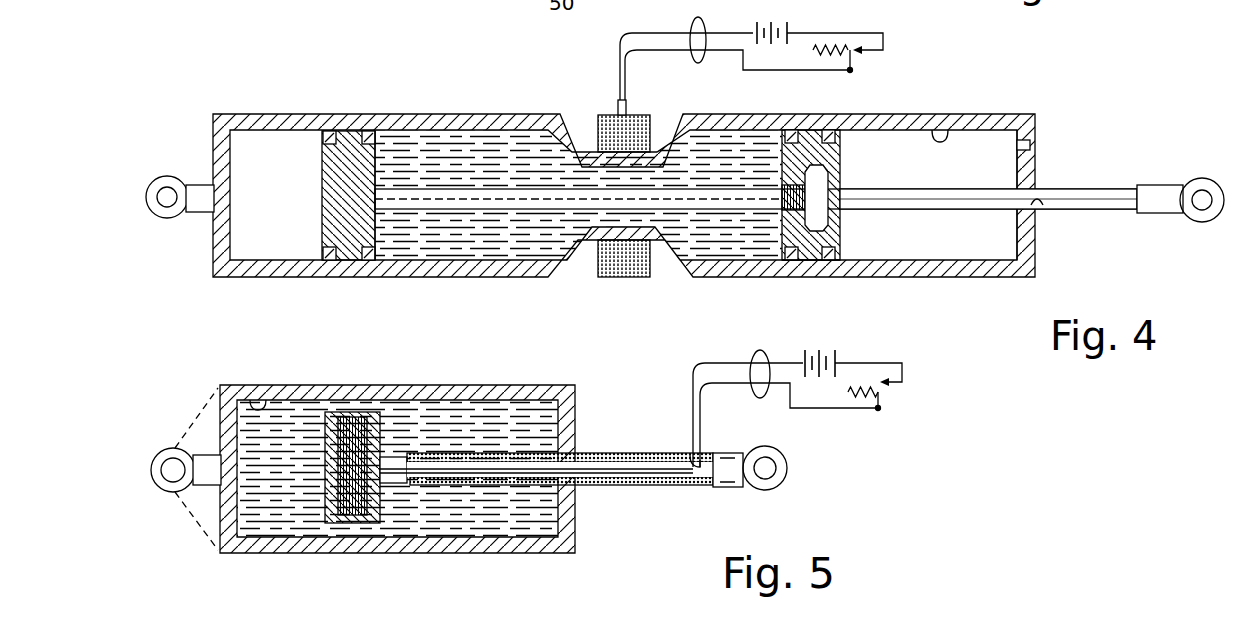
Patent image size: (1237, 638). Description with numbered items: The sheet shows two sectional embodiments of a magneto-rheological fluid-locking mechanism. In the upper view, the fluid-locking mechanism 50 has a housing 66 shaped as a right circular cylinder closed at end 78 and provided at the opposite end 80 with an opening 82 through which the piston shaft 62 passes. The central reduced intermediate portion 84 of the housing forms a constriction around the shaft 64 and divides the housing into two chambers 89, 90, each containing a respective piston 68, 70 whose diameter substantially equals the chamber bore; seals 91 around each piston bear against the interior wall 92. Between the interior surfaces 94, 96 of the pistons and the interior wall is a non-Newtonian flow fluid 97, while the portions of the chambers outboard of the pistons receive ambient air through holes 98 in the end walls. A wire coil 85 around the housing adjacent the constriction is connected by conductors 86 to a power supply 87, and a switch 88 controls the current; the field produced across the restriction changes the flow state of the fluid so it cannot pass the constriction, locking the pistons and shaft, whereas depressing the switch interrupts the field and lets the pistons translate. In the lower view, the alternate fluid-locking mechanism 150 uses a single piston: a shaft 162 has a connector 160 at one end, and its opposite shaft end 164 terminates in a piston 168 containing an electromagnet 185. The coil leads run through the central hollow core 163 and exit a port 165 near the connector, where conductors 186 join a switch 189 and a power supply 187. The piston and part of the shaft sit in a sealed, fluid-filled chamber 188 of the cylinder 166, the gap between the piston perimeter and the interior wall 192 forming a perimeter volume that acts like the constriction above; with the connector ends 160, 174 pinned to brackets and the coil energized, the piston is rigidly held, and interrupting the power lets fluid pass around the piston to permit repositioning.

In FIG. 4, the fluid-locking mechanism 50 is at (1058, 95).
In FIG. 4, the piston shaft 62 is at (1122, 193).
In FIG. 4, the shaft 64 is at (394, 194).
In FIG. 4, the housing 66 is at (482, 113).
In FIG. 4, the piston 68 is at (348, 183).
In FIG. 4, the piston 70 is at (840, 248).
In FIG. 4, the end 78 is at (213, 125).
In FIG. 4, the end 80 is at (1033, 168).
In FIG. 4, the opening 82 is at (1042, 207).
In FIG. 4, the reduced intermediate portion 84 is at (603, 163).
In FIG. 4, the wire coil 85 is at (636, 114).
In FIG. 4, the conductors 86 is at (692, 25).
In FIG. 4, the power supply 87 is at (783, 30).
In FIG. 4, the switch 88 is at (852, 71).
In FIG. 4, the chamber 89 is at (983, 157).
In FIG. 4, the chamber 90 is at (253, 143).
In FIG. 4, the seals 91 is at (365, 130).
In FIG. 4, the interior wall 92 is at (952, 137).
In FIG. 4, the interior surface 94 is at (375, 234).
In FIG. 4, the interior surface 96 is at (840, 149).
In FIG. 4, the non-Newtonian flow fluid 97 is at (745, 245).
In FIG. 4, the holes 98 is at (1030, 146).
In FIG. 5, the fluid-locking mechanism 150 is at (608, 352).
In FIG. 5, the connector 160 is at (778, 485).
In FIG. 5, the shaft 162 is at (730, 476).
In FIG. 5, the central hollow core 163 is at (627, 465).
In FIG. 5, the shaft end 164 is at (546, 446).
In FIG. 5, the port 165 is at (692, 457).
In FIG. 5, the cylinder 166 is at (532, 395).
In FIG. 5, the piston 168 is at (346, 472).
In FIG. 5, the connector end 174 is at (173, 452).
In FIG. 5, the electromagnet 185 is at (347, 515).
In FIG. 5, the conductors 186 is at (760, 350).
In FIG. 5, the power supply 187 is at (820, 352).
In FIG. 5, the chamber 188 is at (397, 468).
In FIG. 5, the switch 189 is at (880, 395).
In FIG. 5, the interior wall 192 is at (257, 400).